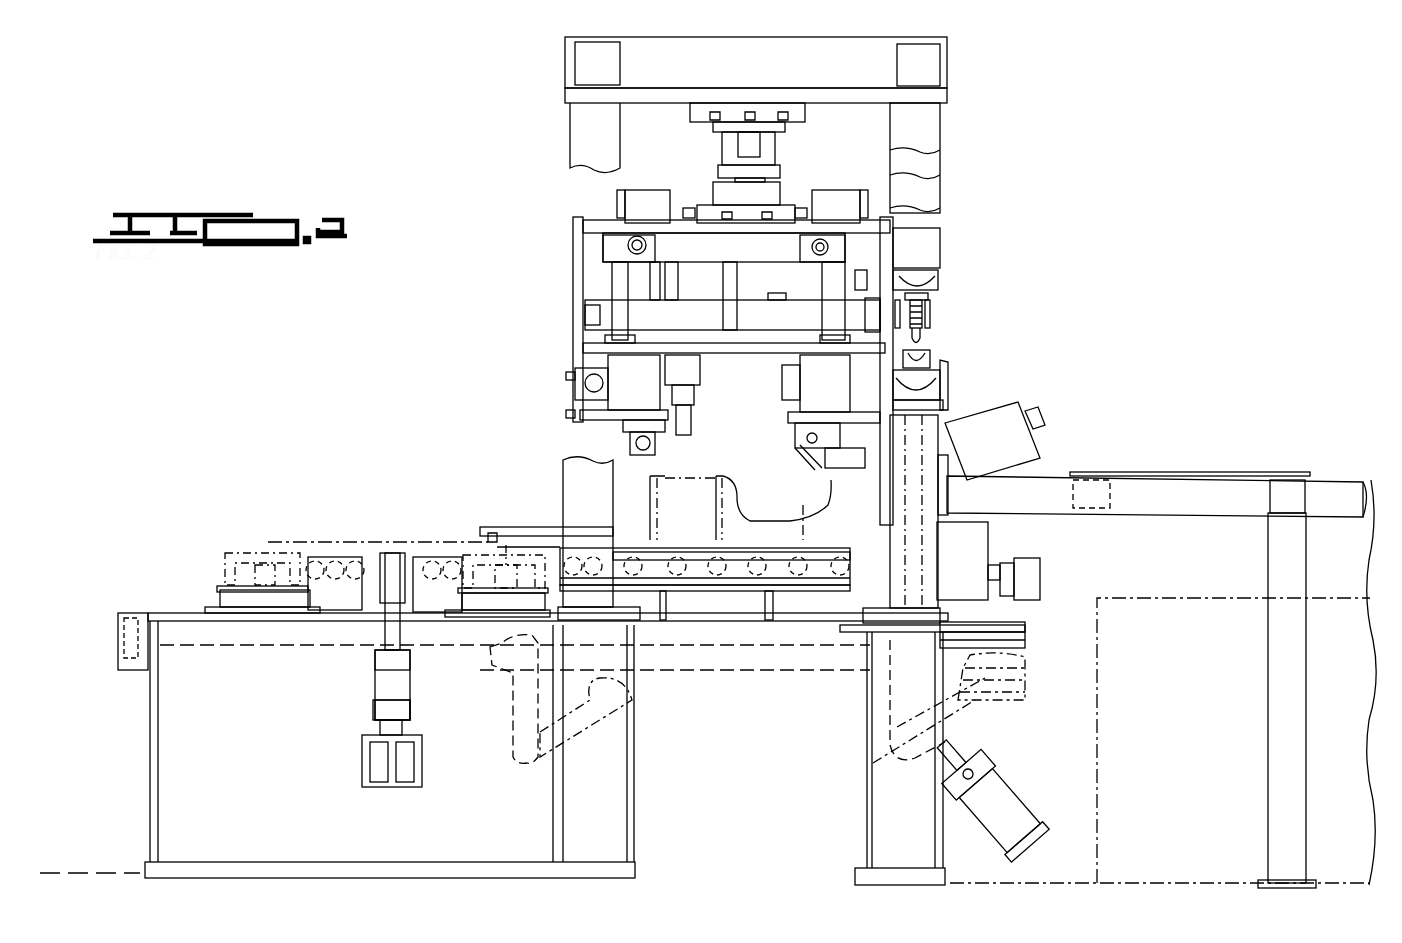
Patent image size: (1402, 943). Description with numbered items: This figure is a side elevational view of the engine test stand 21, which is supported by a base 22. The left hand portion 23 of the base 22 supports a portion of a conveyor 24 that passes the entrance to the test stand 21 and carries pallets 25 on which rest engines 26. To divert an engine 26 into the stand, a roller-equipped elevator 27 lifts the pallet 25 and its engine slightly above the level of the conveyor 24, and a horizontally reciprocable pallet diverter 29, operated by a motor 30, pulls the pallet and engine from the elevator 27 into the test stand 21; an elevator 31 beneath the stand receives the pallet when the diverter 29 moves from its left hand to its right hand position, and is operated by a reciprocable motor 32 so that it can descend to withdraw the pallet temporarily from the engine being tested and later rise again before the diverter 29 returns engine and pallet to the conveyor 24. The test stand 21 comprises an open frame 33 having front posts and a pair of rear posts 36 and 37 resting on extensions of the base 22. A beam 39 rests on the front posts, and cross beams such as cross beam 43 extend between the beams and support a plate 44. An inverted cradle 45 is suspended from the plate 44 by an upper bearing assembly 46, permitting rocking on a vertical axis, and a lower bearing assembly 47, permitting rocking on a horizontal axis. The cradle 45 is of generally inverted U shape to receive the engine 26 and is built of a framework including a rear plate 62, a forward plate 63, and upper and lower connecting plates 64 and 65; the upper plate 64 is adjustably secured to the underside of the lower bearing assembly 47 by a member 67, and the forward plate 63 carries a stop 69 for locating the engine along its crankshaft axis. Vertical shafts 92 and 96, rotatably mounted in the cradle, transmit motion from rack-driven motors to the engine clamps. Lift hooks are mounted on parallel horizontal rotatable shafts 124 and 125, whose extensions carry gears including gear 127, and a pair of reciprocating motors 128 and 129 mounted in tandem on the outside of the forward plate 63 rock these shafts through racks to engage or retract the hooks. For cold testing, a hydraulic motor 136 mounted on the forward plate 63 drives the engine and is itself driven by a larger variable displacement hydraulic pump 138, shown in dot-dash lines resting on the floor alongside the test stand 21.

The test stand 21 is at (968, 250).
The base 22 is at (128, 768).
The left hand portion of base 23 is at (285, 804).
The conveyor 24 is at (215, 598).
The pallet 25 is at (305, 540).
The engine 26 is at (830, 497).
The roller-equipped elevator 27 is at (372, 600).
The pallet diverter 29 is at (970, 544).
The motor 30 is at (1000, 562).
The elevator 31 is at (800, 598).
The reciprocable motor 32 is at (1012, 800).
The open frame 33 is at (940, 432).
The rear post 36 is at (940, 128).
The rear post 37 is at (940, 160).
The beam 39 is at (620, 66).
The cross beam 43 is at (940, 64).
The plate 44 is at (692, 110).
The inverted cradle 45 is at (585, 207).
The upper bearing assembly 46 is at (722, 145).
The lower bearing assembly 47 is at (758, 192).
The rear plate 62 is at (583, 245).
The forward plate 63 is at (893, 222).
The upper connecting plate 64 is at (705, 225).
The lower connecting plate 65 is at (762, 352).
The member 67 is at (788, 212).
The stop 69 is at (831, 412).
The vertical shaft 92 is at (615, 272).
The vertical shaft 96 is at (840, 300).
The horizontal rotatable shaft 124 is at (780, 284).
The horizontal rotatable shaft 125 is at (713, 322).
The gear 127 is at (935, 314).
The reciprocating motor 128 is at (937, 284).
The reciprocating motor 129 is at (950, 380).
The hydraulic motor 136 is at (1010, 418).
The variable displacement hydraulic pump 138 is at (1140, 600).